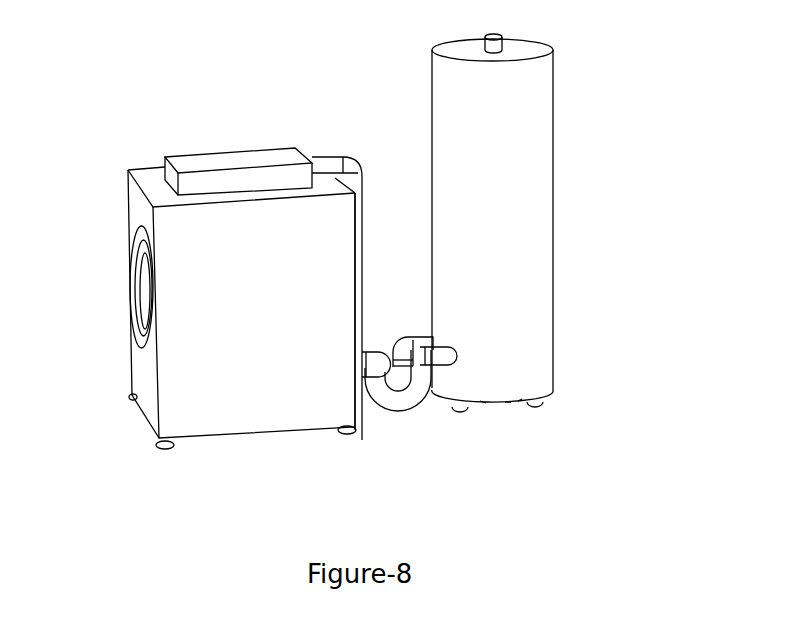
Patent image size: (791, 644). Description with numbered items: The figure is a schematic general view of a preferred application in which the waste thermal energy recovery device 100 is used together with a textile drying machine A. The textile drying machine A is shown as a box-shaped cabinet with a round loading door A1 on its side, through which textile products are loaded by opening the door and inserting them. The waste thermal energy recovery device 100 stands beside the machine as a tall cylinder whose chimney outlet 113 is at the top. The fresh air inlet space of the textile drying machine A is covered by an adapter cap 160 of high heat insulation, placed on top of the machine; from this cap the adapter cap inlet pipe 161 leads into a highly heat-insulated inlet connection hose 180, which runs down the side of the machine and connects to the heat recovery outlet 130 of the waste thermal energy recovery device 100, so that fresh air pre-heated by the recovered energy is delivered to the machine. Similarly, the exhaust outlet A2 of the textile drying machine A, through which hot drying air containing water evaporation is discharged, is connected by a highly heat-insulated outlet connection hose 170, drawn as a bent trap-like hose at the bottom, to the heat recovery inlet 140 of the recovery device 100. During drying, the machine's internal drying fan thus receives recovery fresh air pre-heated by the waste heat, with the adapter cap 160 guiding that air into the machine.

The waste thermal energy recovery device 100 is at (525, 211).
The chimney outlet 113 is at (502, 42).
The heat recovery outlet 130 is at (427, 343).
The heat recovery inlet 140 is at (443, 353).
The adapter cap 160 is at (238, 163).
The adapter cap inlet pipe 161 is at (332, 170).
The outlet connection hose 170 is at (403, 402).
The inlet connection hose 180 is at (362, 220).
The textile drying machine A is at (265, 390).
The loading door A1 is at (133, 277).
The exhaust outlet A2 is at (361, 432).